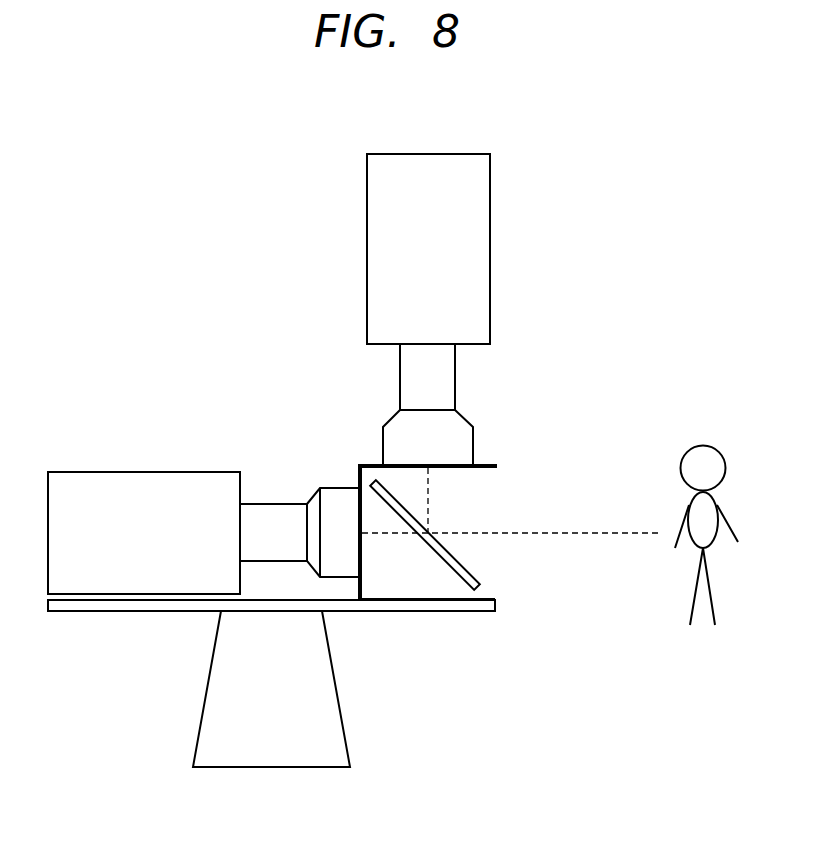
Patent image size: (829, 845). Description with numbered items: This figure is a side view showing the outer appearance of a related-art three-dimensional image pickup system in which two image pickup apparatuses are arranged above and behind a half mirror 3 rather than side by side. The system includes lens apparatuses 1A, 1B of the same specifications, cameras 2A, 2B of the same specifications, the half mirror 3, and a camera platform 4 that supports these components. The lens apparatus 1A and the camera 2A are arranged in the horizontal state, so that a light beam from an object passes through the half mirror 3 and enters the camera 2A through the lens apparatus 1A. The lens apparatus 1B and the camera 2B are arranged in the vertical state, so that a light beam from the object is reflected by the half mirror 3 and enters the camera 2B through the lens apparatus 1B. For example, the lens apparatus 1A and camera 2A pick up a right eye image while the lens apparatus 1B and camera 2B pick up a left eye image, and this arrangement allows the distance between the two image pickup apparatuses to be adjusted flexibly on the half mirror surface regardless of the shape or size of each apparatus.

The camera 2B is at (490, 252).
The lens apparatus 1B is at (473, 436).
The camera 2A is at (147, 471).
The lens apparatus 1A is at (276, 503).
The half mirror 3 is at (463, 562).
The camera platform 4 is at (338, 690).